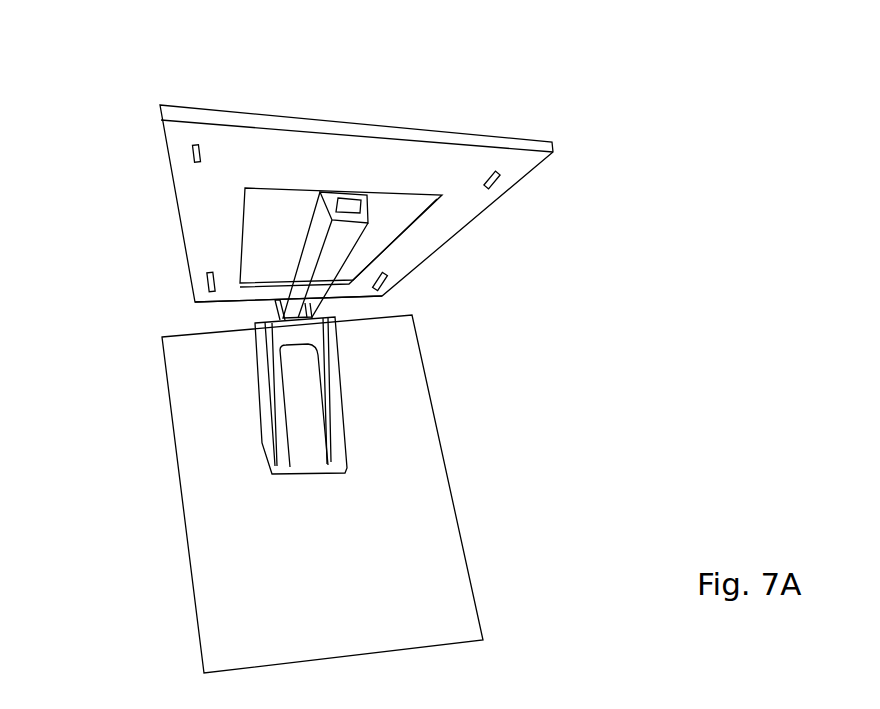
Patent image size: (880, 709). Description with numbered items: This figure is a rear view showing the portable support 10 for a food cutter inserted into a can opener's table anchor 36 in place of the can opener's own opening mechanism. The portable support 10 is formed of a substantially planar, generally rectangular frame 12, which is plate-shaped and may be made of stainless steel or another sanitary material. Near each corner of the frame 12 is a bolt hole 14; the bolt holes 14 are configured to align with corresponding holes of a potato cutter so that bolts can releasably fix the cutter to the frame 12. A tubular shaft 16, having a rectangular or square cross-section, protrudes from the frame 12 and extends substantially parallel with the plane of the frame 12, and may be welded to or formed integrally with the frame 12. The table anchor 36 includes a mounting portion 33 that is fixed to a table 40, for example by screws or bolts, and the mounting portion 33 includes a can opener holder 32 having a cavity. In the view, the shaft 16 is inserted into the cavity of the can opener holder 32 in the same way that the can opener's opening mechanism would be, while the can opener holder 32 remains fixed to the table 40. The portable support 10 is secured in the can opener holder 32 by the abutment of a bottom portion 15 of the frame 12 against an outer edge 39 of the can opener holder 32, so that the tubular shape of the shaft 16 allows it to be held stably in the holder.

The portable support 10 is at (167, 50).
The frame 12 is at (430, 240).
The bolt holes 14 is at (192, 152).
The bottom portion 15 is at (222, 306).
The shaft 16 is at (320, 270).
The can opener holder 32 is at (277, 303).
The mounting portion 33 is at (340, 376).
The table anchor 36 is at (347, 435).
The outer edge 39 is at (277, 302).
The table 40 is at (448, 570).